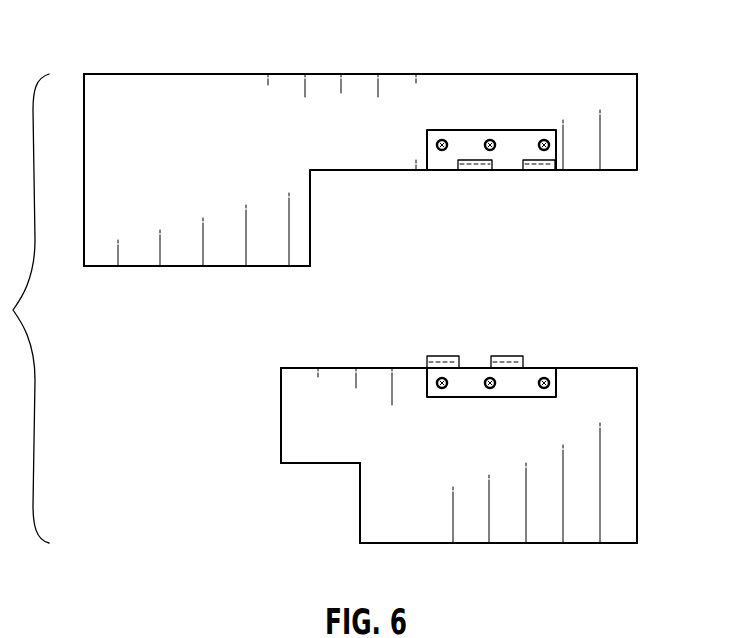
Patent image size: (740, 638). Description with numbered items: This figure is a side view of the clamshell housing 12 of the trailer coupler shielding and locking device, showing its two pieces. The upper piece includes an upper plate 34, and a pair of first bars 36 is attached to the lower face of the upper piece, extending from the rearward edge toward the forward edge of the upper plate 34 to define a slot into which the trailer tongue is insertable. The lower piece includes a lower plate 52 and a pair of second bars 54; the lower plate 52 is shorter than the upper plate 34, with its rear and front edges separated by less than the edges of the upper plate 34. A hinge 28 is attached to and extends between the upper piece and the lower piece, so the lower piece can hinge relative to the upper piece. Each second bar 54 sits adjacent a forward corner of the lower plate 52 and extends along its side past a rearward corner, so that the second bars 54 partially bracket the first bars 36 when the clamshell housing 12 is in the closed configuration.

The clamshell housing 12 is at (620, 172).
The hinge 28 is at (543, 172).
The upper plate 34 is at (238, 92).
The first bars 36 is at (225, 240).
The lower plate 52 is at (395, 491).
The second bars 54 is at (336, 425).